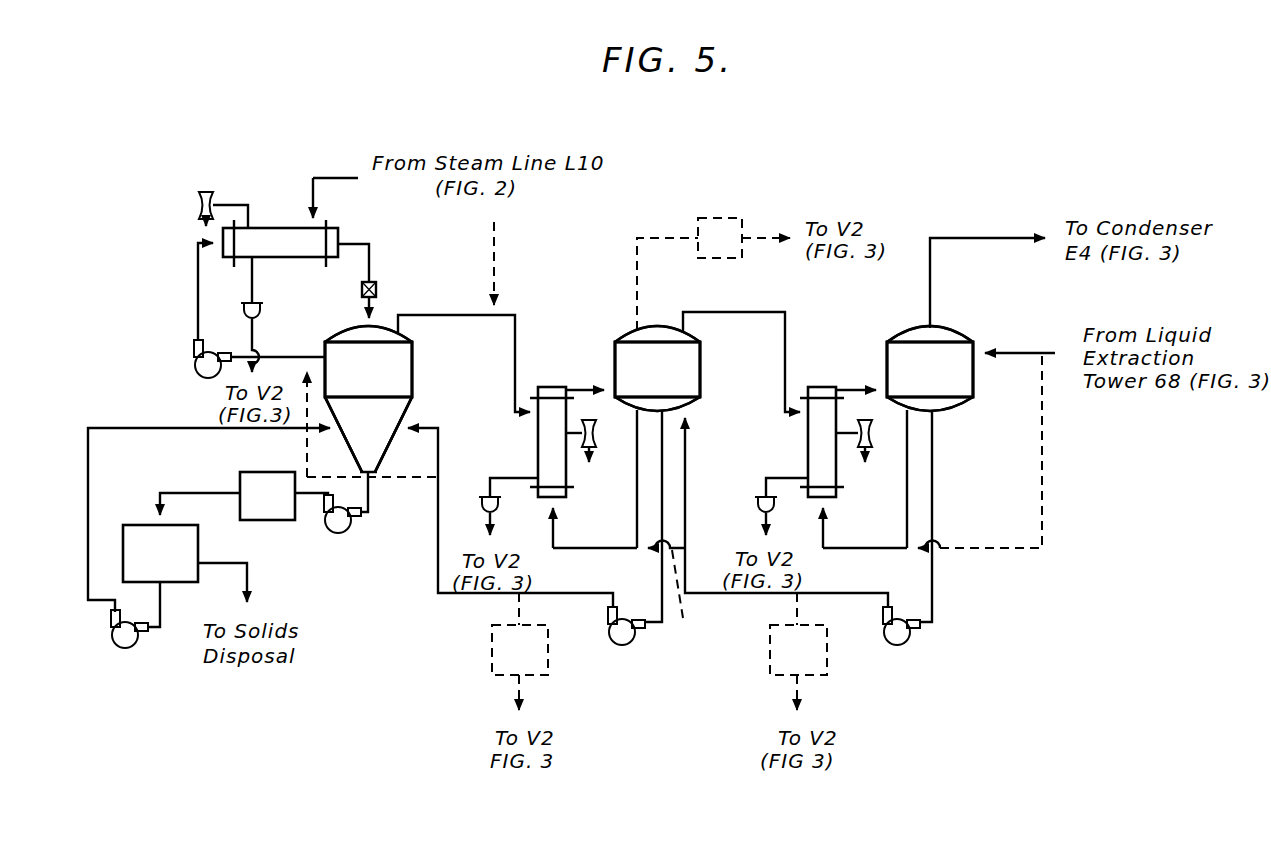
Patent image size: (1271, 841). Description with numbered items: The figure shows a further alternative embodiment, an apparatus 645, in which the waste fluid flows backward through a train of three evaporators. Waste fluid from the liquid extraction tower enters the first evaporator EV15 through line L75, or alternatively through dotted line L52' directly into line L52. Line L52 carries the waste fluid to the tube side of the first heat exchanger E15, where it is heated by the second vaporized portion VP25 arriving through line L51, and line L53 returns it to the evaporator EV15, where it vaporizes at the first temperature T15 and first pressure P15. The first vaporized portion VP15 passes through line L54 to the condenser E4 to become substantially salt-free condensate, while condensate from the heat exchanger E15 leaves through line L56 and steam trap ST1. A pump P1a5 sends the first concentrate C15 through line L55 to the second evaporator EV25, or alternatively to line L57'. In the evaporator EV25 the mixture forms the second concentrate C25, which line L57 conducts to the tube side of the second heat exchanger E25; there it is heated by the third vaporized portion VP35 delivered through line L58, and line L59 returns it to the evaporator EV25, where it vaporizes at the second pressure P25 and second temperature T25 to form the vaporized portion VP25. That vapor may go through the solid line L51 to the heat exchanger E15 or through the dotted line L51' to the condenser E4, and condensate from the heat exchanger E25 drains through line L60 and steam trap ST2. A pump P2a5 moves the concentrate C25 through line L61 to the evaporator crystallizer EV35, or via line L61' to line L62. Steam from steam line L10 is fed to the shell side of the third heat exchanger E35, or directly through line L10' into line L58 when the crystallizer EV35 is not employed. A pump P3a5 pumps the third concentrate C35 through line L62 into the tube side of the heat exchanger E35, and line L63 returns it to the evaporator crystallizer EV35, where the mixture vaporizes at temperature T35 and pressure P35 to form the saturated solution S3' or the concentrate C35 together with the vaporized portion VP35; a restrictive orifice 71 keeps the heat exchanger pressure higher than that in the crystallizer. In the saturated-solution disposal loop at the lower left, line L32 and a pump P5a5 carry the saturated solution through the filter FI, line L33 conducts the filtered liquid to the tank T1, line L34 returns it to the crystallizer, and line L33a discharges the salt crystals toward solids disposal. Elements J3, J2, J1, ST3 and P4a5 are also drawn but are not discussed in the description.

The jet/valve J3 is at (217, 187).
The steam line L10 is at (337, 183).
The line L62 is at (197, 263).
The third heat exchanger E35 is at (296, 256).
The steam trap ST3 is at (257, 310).
The pump P3a5 is at (197, 373).
The third vaporized portion VP35 is at (353, 338).
The evaporator crystallizer EV35 is at (387, 381).
The line L63 is at (372, 274).
The restrictive orifice 71 is at (378, 290).
The line L10' is at (530, 263).
The line L58 is at (517, 337).
The third temperature T35 is at (382, 352).
The third pressure P35 is at (382, 352).
The third concentrate C35 is at (380, 422).
The saturated solution S3' is at (418, 431).
The line L59 is at (588, 389).
The second heat exchanger E25 is at (521, 453).
The jet/valve J2 is at (597, 441).
The line L60 is at (514, 478).
The steam trap ST2 is at (498, 506).
The line L57 is at (619, 528).
The line L57' is at (703, 597).
The line L61 is at (492, 523).
The line L61' is at (338, 424).
The line L32 is at (371, 487).
The pump P4a P4a5 is at (338, 534).
The line L34 is at (88, 458).
The line L33 is at (176, 492).
The filter FI is at (279, 507).
The tank T1 is at (176, 564).
The line L33a is at (237, 557).
The pump P5a5 is at (133, 646).
The apparatus 645 is at (842, 194).
The condenser E4 is at (536, 662).
The line L51' is at (636, 284).
The second vaporized portion VP25 is at (657, 330).
The second evaporator EV25 is at (682, 381).
The second temperature T25 is at (690, 352).
The second pressure P25 is at (690, 352).
The second concentrate C25 is at (688, 405).
The line L51 is at (772, 354).
The line L53 is at (856, 390).
The first heat exchanger E15 is at (792, 448).
The jet/valve J1 is at (869, 441).
The line L56 is at (766, 478).
The steam trap ST1 is at (757, 508).
The line L52 is at (881, 528).
The line L52' is at (1028, 450).
The line L75 is at (1005, 354).
The first vaporized portion VP15 is at (912, 337).
The first evaporator EV15 is at (952, 382).
The line L54 is at (1012, 241).
The first temperature T15 is at (935, 352).
The first pressure P15 is at (935, 352).
The first concentrate C15 is at (948, 405).
The line L55 is at (936, 482).
The pump P1a5 is at (897, 646).
The pump P2a5 is at (620, 646).